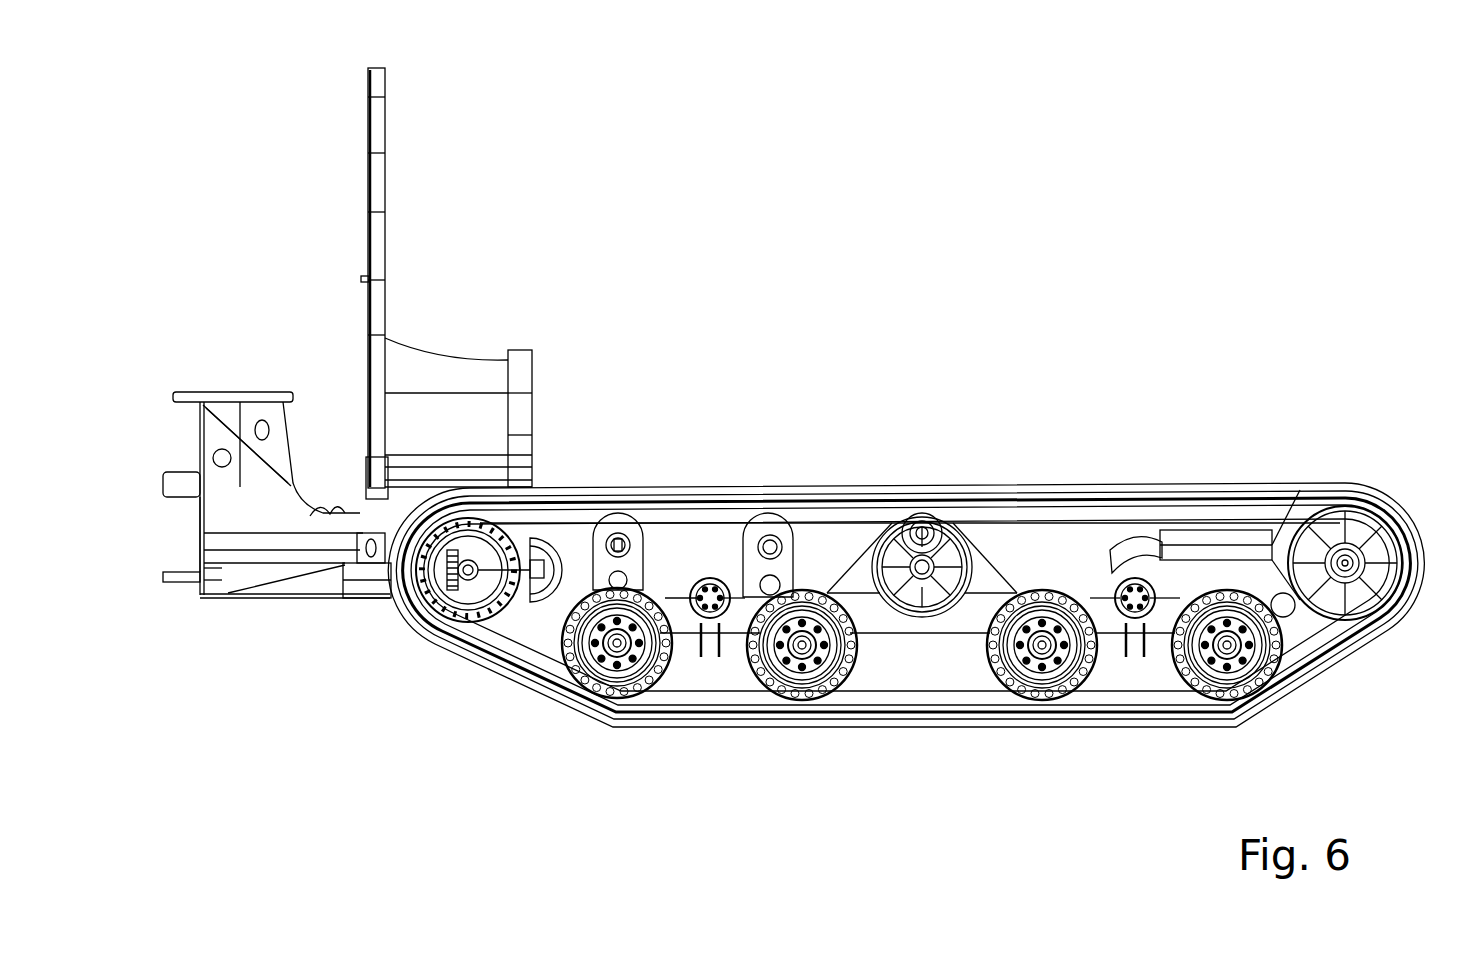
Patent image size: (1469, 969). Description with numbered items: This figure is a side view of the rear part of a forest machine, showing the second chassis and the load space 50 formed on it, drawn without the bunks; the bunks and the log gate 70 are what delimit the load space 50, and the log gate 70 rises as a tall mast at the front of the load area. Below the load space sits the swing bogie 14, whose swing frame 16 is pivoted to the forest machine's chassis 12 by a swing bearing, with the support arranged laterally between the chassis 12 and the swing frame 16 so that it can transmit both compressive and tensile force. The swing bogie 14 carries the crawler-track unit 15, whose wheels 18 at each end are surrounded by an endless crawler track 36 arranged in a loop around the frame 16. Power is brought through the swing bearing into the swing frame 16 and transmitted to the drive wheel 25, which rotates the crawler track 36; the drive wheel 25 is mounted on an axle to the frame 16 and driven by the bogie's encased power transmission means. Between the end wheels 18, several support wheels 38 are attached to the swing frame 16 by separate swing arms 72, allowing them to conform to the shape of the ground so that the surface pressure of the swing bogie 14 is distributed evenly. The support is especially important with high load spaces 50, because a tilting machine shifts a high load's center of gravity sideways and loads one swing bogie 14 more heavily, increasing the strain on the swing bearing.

The chassis 12 is at (200, 372).
The swing bogie 14 is at (750, 405).
The crawler-track unit 15 is at (903, 757).
The swing frame 16 is at (1040, 547).
The wheels 18 is at (477, 627).
The drive wheel 25 is at (518, 627).
The crawler track 36 is at (1300, 495).
The support wheels 38 is at (767, 690).
The load space 50 is at (788, 262).
The log gate 70 is at (380, 183).
The swing arms 72 is at (660, 603).